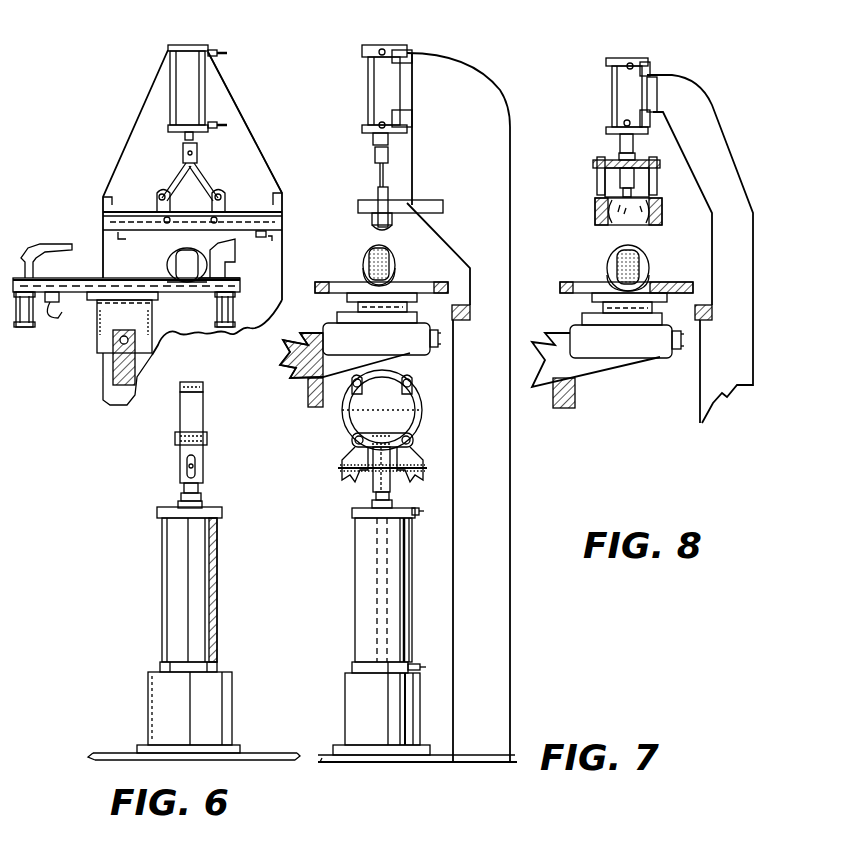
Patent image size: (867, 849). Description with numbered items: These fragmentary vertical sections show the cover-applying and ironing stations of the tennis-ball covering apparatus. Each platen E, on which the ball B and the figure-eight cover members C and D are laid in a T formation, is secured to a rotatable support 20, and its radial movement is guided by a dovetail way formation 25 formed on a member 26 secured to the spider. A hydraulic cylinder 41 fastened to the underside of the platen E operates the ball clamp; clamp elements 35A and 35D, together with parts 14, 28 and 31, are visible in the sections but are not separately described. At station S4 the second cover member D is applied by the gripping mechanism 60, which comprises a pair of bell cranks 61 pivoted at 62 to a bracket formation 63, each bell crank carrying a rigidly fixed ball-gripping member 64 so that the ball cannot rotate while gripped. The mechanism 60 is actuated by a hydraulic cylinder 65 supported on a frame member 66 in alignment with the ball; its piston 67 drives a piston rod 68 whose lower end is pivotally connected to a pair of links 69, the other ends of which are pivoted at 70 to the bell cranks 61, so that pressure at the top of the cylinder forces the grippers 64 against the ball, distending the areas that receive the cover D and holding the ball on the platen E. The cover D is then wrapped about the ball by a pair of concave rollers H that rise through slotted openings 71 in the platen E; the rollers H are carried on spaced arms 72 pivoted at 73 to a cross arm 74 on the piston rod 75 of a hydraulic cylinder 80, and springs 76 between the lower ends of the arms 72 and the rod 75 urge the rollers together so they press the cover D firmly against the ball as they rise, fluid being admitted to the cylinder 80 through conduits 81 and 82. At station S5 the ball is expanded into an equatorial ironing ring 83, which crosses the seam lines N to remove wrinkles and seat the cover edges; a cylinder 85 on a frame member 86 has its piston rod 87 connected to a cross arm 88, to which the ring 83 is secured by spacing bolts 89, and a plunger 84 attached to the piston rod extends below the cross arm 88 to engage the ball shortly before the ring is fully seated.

In FIG. 6, the frame body 14 is at (113, 386).
In FIG. 7, the frame body 14 is at (292, 358).
In FIG. 6, the support 20 is at (108, 300).
In FIG. 6, the dovetail way formation 25 is at (150, 311).
In FIG. 8, the dovetail way formation 25 is at (600, 315).
In FIG. 6, the member 26 is at (105, 362).
In FIG. 7, the member 26 is at (382, 339).
In FIG. 8, the member 26 is at (627, 341).
In FIG. 7, the bracket 28 is at (463, 315).
In FIG. 7, the post 31 is at (310, 395).
In FIG. 8, the post 31 is at (578, 392).
In FIG. 6, the clamp arm 35A is at (53, 250).
In FIG. 6, the clamp bracket 35D is at (228, 258).
In FIG. 6, the cylinder 41 is at (28, 328).
In FIG. 6, the gripping mechanism 60 is at (224, 70).
In FIG. 6, the bell cranks 61 is at (156, 205).
In FIG. 6, the pivot 62 is at (170, 218).
In FIG. 6, the bracket formation 63 is at (276, 221).
In FIG. 6, the ball-gripping member 64 is at (119, 236).
In FIG. 6, the hydraulic cylinder 65 is at (205, 104).
In FIG. 6, the frame member 66 is at (234, 111).
In FIG. 7, the frame member 66 is at (417, 407).
In FIG. 6, the piston 67 is at (174, 58).
In FIG. 6, the piston rod 68 is at (183, 147).
In FIG. 6, the links 69 is at (173, 183).
In FIG. 6, the pivot 70 is at (158, 198).
In FIG. 7, the slotted openings 71 is at (340, 294).
In FIG. 6, the spaced arms 72 is at (196, 420).
In FIG. 7, the spaced arms 72 is at (350, 405).
In FIG. 6, the pivot 73 is at (208, 440).
In FIG. 7, the pivot 73 is at (352, 440).
In FIG. 7, the cross arm 74 is at (414, 408).
In FIG. 6, the piston rod 75 is at (200, 492).
In FIG. 7, the piston rod 75 is at (392, 498).
In FIG. 7, the springs 76 is at (418, 478).
In FIG. 6, the hydraulic cylinder 80 is at (206, 584).
In FIG. 7, the hydraulic cylinder 80 is at (410, 550).
In FIG. 7, the conduit 81 is at (417, 516).
In FIG. 7, the conduit 82 is at (418, 665).
In FIG. 8, the ironing ring 83 is at (595, 210).
In FIG. 8, the plunger 84 is at (634, 186).
In FIG. 8, the cylinder 85 is at (613, 91).
In FIG. 8, the frame member 86 is at (690, 90).
In FIG. 8, the piston rod 87 is at (620, 143).
In FIG. 8, the cross arm 88 is at (592, 164).
In FIG. 8, the spacing bolts 89 is at (660, 176).
In FIG. 6, the ball B is at (185, 264).
In FIG. 7, the ball B is at (396, 262).
In FIG. 7, the cover member C is at (384, 250).
In FIG. 8, the cover member C is at (614, 256).
In FIG. 7, the cover member D is at (434, 281).
In FIG. 8, the cover member D is at (607, 268).
In FIG. 6, the platen E is at (240, 289).
In FIG. 8, the platen E is at (562, 284).
In FIG. 6, the concave rollers H is at (196, 382).
In FIG. 7, the concave rollers H is at (366, 386).
In FIG. 8, the seam lines N is at (645, 258).
In FIG. 6, the station S4 is at (78, 267).
In FIG. 7, the station S4 is at (452, 264).
In FIG. 8, the station S5 is at (685, 281).